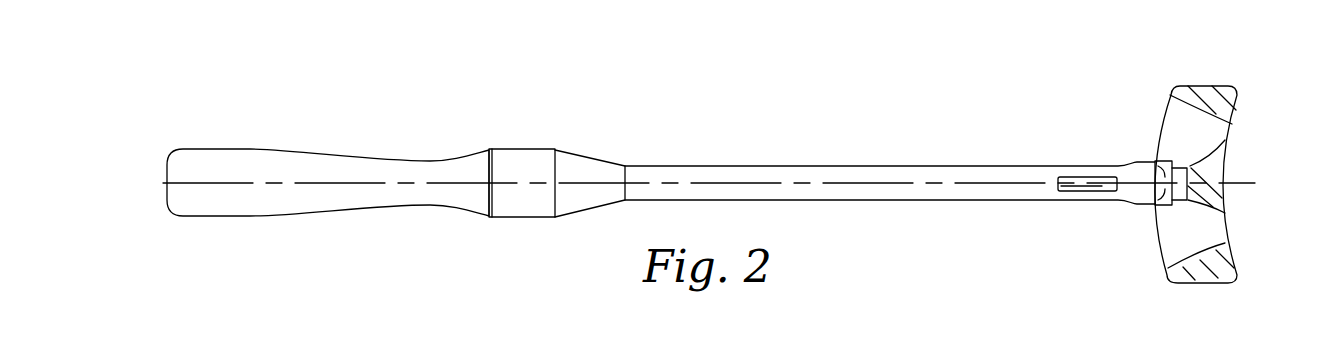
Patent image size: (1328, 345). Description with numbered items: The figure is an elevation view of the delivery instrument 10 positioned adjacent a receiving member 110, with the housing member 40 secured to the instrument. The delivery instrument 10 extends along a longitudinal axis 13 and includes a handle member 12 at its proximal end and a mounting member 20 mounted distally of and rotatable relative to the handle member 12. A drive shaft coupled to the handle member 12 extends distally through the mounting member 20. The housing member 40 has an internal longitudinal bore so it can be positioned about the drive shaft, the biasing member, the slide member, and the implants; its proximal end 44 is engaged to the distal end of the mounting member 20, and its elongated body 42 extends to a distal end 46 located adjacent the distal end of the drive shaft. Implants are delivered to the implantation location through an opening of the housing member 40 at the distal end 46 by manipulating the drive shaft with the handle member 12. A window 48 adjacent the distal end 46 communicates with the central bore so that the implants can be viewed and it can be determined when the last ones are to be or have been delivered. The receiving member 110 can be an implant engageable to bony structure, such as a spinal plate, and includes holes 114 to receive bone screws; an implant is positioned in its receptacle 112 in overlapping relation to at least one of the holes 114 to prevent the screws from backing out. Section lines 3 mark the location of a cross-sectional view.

The delivery instrument 10 is at (732, 161).
The handle member 12 is at (300, 161).
The mounting member 20 is at (515, 140).
The section line 3- 3 is at (395, 183).
The proximal end 44 is at (628, 165).
The housing member 40 is at (898, 186).
The elongated body 42 is at (948, 172).
The window 48 is at (1076, 175).
The longitudinal axis 13 is at (990, 185).
The distal end 46 is at (1148, 207).
The receiving member 110 is at (1202, 161).
The receptacle 112 is at (1180, 165).
The holes 114 is at (1162, 140).